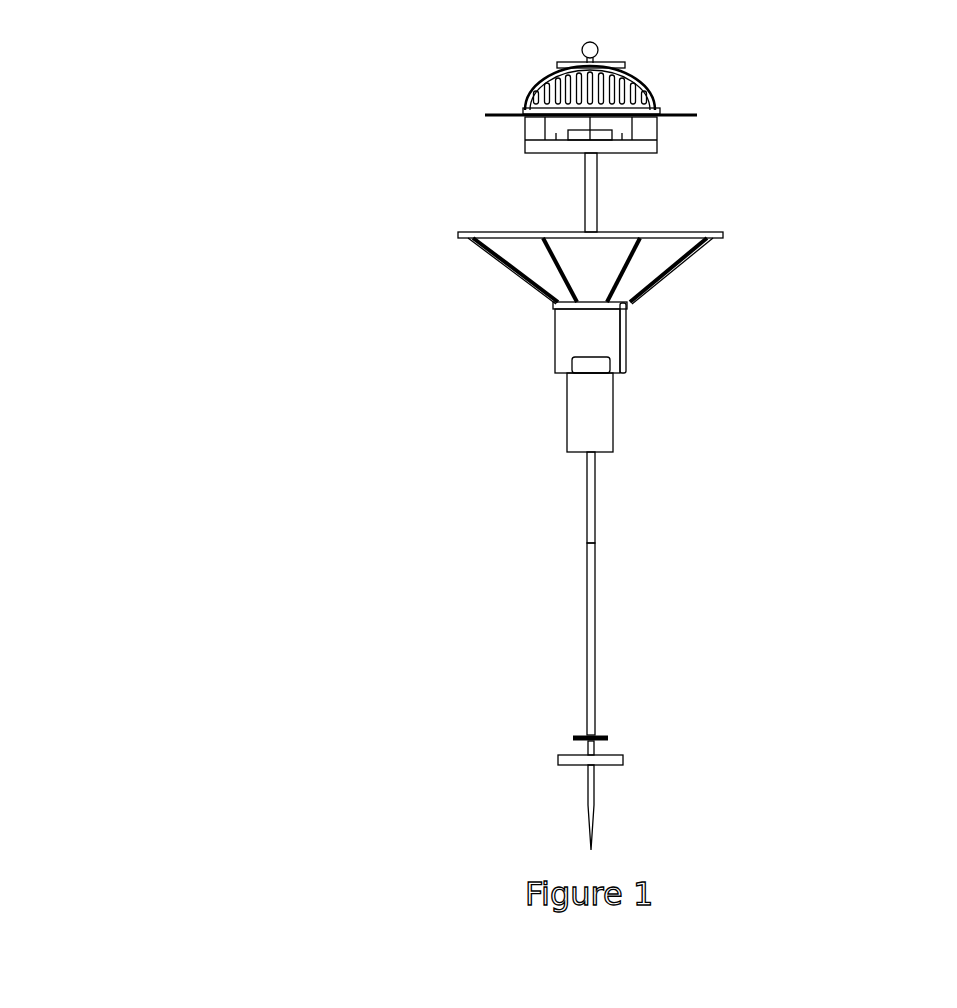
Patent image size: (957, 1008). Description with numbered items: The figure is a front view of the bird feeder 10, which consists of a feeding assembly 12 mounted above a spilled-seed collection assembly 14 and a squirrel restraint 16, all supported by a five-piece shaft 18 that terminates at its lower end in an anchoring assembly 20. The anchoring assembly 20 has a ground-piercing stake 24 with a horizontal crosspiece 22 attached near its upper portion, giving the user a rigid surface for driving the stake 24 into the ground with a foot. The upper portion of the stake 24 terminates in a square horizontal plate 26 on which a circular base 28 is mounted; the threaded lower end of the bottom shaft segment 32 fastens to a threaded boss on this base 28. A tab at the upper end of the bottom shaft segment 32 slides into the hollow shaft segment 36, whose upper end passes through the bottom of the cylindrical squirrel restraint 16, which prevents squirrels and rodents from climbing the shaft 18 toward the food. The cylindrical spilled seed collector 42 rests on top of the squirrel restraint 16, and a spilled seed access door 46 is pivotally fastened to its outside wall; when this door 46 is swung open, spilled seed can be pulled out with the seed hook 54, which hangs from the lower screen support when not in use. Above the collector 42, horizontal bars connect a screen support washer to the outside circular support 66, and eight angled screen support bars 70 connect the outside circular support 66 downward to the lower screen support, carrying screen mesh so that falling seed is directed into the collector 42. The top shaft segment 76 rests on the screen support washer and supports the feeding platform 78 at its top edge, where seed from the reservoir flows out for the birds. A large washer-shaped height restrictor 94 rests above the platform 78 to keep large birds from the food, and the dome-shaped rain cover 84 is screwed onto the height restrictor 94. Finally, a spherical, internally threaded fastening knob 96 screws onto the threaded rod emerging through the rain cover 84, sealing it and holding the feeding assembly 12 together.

The bird feeder 10 is at (270, 551).
The feeding assembly 12 is at (440, 141).
The spilled-seed collection assembly 14 is at (695, 295).
The squirrel restraint 16 is at (588, 412).
The shaft 18 is at (623, 574).
The anchoring assembly 20 is at (465, 779).
The horizontal crosspiece 22 is at (547, 736).
The ground-piercing stake 24 is at (596, 800).
The square horizontal plate 26 is at (627, 749).
The circular base 28 is at (571, 717).
The bottom shaft segment 32 is at (597, 650).
The hollow shaft segment 36 is at (590, 487).
The spilled seed collector 42 is at (600, 325).
The spilled seed access door 46 is at (615, 375).
The seed hook 54 is at (622, 340).
The outside circular support 66 is at (441, 242).
The angled screen support bars 70 is at (489, 280).
The top shaft segment 76 is at (622, 178).
The feeding platform 78 is at (520, 152).
The rain cover 84 is at (510, 76).
The height restrictor 94 is at (701, 104).
The fastening knob 96 is at (622, 48).